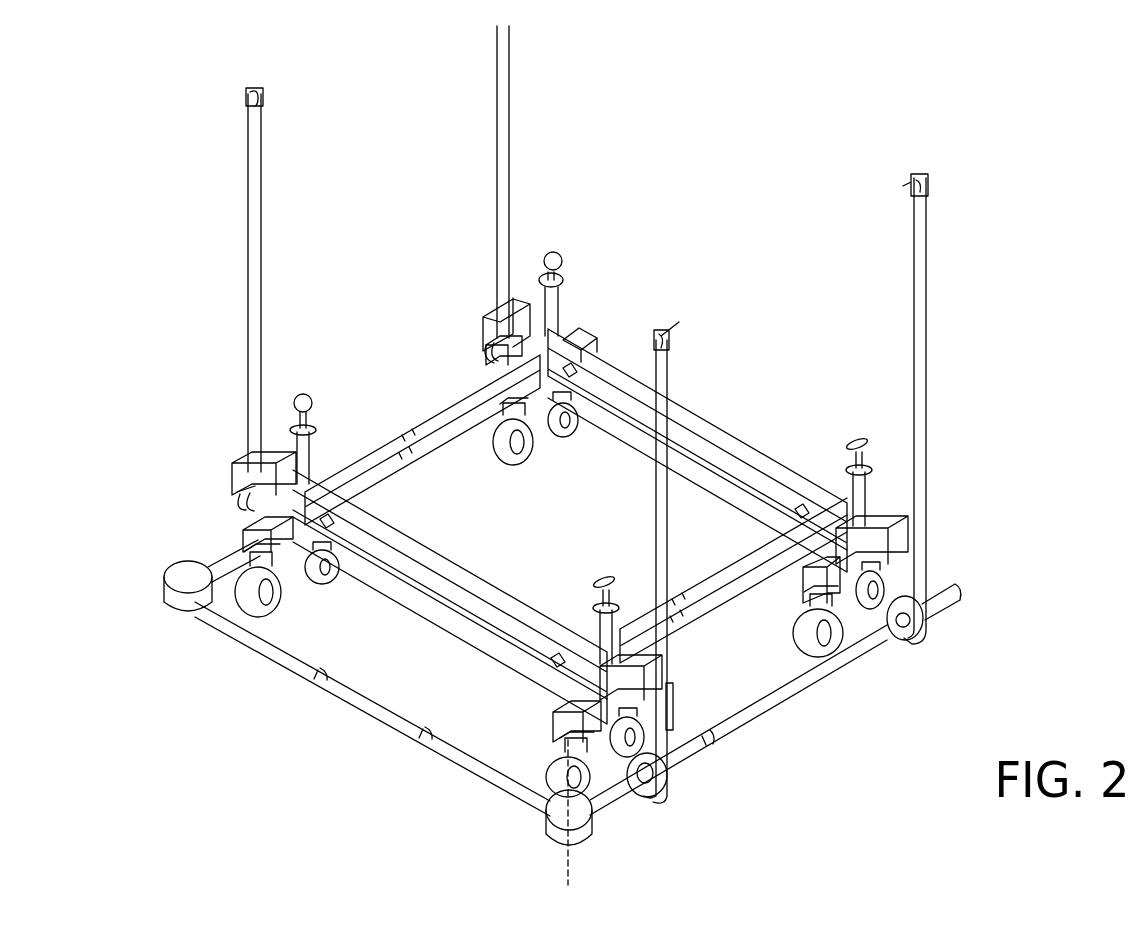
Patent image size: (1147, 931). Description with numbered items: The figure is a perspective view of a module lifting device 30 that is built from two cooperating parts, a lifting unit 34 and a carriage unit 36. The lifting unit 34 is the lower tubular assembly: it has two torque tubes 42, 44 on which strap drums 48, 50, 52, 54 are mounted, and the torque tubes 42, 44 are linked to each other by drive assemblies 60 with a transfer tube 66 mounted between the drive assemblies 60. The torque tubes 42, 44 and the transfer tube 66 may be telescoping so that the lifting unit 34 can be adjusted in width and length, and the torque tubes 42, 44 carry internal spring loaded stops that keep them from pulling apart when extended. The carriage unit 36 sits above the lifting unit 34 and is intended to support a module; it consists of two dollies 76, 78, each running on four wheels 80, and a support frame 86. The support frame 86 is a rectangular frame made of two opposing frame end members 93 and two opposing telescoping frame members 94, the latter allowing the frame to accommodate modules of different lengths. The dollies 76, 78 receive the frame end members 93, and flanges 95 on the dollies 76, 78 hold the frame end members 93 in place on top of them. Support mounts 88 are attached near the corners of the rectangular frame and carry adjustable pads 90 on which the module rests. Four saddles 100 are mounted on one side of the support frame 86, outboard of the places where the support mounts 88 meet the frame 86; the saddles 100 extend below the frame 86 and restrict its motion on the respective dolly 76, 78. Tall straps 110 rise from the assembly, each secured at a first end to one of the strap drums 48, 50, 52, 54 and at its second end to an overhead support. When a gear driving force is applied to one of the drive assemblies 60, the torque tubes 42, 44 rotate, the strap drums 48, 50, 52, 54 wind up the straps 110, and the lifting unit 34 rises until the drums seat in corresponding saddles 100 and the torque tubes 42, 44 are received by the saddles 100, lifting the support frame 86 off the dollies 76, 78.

The lifting device 30 is at (1043, 218).
The lifting unit 34 is at (428, 735).
The carriage unit 36 is at (747, 420).
The torque tube 42 is at (776, 692).
The torque tube 44 is at (230, 556).
The strap drum 48 is at (660, 792).
The strap drum 50 is at (914, 632).
The strap drum 52 is at (250, 480).
The strap drum 54 is at (500, 363).
The drive assembly 60 is at (181, 608).
The transfer tube 66 is at (370, 708).
The dolly 76 is at (622, 422).
The dolly 78 is at (437, 615).
The wheel 80 is at (562, 434).
The support frame 86 is at (700, 414).
The support mount 88 is at (560, 304).
The adjustable pad 90 is at (560, 254).
The frame end member 93 is at (612, 368).
The telescoping frame member 94 is at (437, 412).
The flange 95 is at (570, 372).
The saddle 100 is at (496, 318).
The strap 110 is at (263, 158).